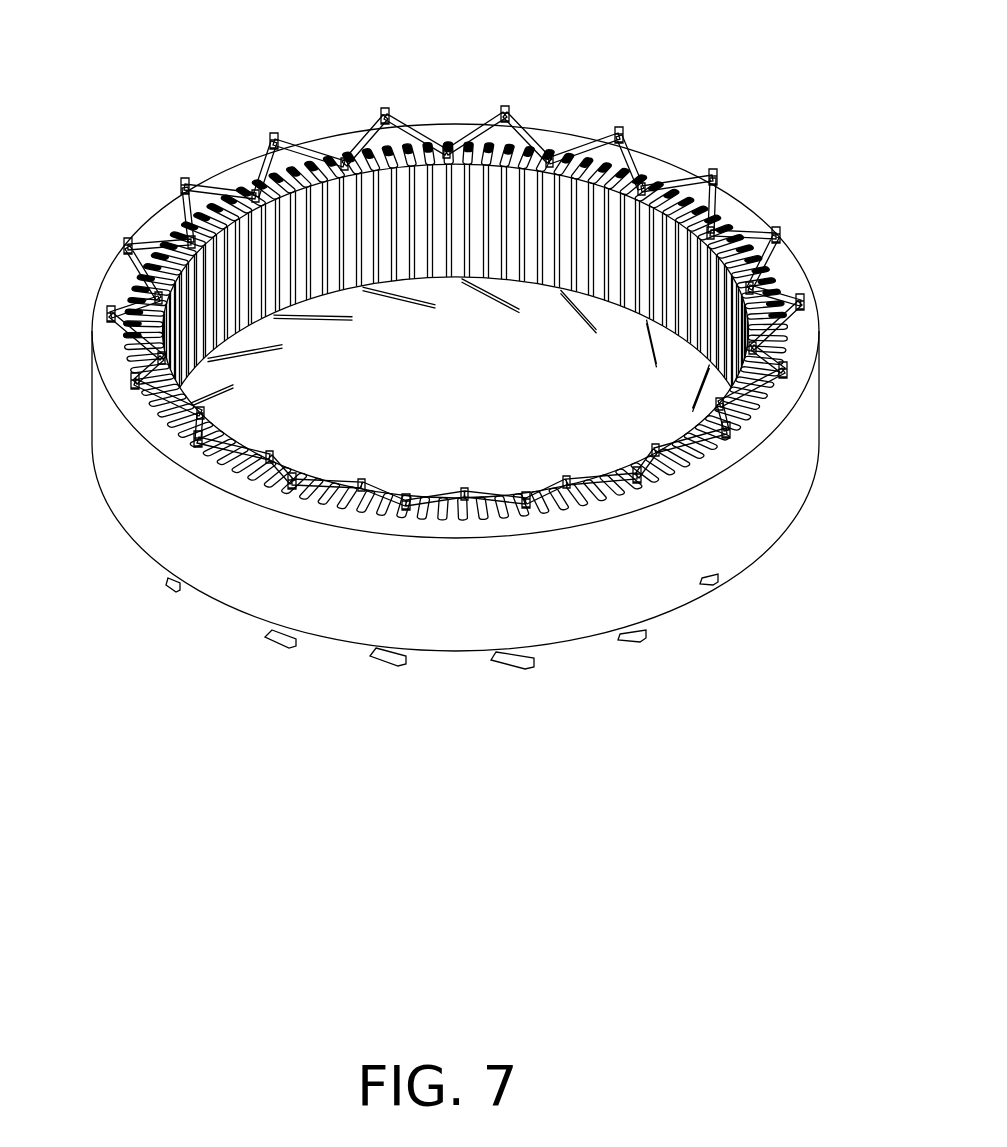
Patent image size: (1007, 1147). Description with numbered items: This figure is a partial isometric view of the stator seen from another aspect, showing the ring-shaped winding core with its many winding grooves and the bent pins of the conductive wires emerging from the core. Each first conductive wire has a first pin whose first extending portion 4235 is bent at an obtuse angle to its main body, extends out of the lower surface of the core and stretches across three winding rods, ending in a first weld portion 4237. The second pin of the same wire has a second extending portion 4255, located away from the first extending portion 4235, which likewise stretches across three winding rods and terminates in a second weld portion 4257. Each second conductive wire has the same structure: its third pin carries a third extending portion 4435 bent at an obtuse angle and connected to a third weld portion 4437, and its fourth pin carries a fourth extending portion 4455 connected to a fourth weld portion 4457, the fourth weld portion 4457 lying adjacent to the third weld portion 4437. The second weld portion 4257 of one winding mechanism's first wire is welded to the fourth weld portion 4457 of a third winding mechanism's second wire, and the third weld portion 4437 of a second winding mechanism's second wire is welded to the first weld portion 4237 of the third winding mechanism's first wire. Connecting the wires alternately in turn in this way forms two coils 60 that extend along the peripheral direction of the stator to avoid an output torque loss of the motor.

The coil 60 is at (653, 153).
The first extending portion 4235 is at (473, 110).
The first weld portion 4237 is at (512, 100).
The second extending portion 4255 is at (210, 190).
The second weld portion 4257 is at (153, 210).
The third extending portion 4435 is at (402, 117).
The third weld portion 4437 is at (348, 107).
The fourth extending portion 4455 is at (341, 112).
The fourth weld portion 4457 is at (375, 113).